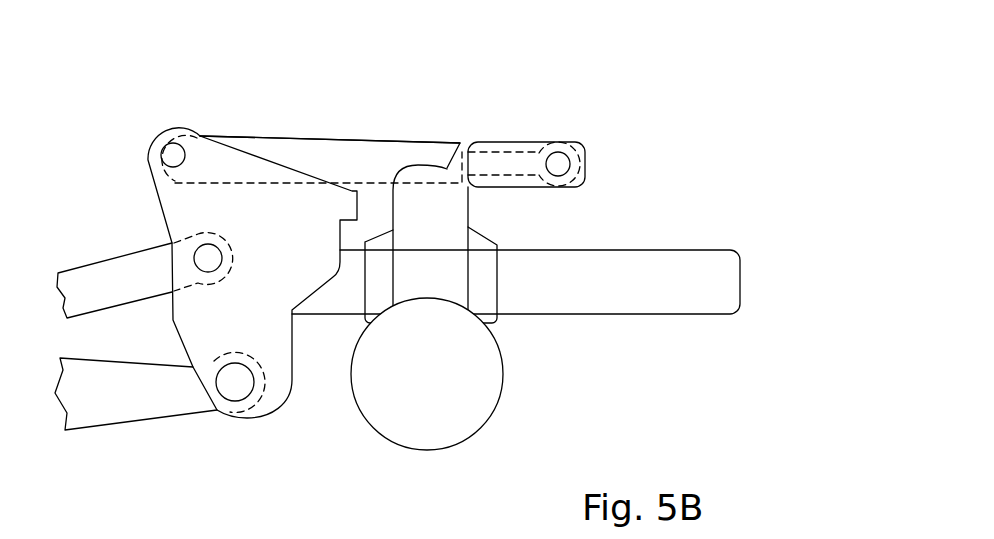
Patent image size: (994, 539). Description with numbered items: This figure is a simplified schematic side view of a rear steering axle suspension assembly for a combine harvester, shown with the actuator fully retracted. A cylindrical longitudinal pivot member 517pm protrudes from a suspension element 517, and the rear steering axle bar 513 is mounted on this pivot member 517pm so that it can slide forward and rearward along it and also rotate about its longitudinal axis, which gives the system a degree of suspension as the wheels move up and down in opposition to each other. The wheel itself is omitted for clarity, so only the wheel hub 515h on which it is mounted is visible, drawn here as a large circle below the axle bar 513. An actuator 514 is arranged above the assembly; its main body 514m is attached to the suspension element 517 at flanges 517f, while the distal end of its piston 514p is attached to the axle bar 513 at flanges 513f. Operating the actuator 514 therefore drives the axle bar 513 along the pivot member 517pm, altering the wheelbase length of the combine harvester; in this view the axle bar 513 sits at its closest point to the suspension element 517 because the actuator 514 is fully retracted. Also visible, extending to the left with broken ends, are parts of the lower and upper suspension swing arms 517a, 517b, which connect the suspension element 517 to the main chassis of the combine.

The rear steering axle bar 513 is at (450, 247).
The flanges 513f is at (533, 152).
The actuator 514 is at (396, 138).
The main body 514m is at (313, 158).
The piston 514p is at (502, 165).
The wheel hub 515h is at (458, 382).
The suspension element 517 is at (250, 282).
The lower suspension arm 517a is at (140, 395).
The upper suspension arm 517b is at (92, 283).
The flanges 517f is at (212, 163).
The cylindrical longitudinal pivot member 517pm is at (705, 282).